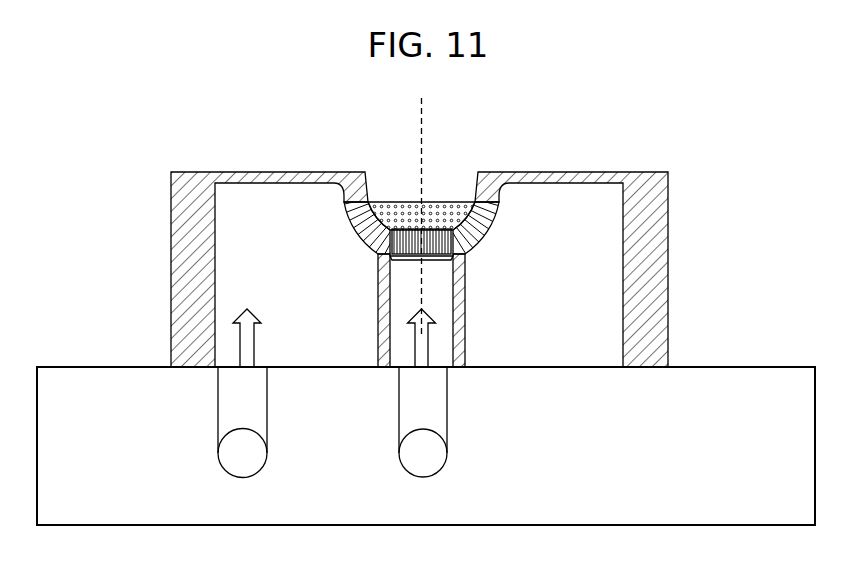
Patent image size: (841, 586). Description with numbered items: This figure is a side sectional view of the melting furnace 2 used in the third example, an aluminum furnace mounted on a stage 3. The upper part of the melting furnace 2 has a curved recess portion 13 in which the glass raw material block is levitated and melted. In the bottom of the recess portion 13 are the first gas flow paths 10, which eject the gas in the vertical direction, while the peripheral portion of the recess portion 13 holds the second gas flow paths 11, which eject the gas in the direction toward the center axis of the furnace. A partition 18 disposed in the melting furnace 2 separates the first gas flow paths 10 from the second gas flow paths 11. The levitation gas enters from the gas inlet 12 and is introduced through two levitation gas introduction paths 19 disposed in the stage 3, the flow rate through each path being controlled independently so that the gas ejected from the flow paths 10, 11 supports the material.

The melting furnace 2 is at (501, 180).
The stage 3 is at (725, 378).
The first gas flow paths 10 is at (451, 263).
The second gas flow paths 11 is at (322, 205).
The gas inlet 12 is at (406, 343).
The recess portion 13 is at (393, 197).
The partition 18 is at (466, 339).
The levitation gas introduction paths 19 is at (410, 457).